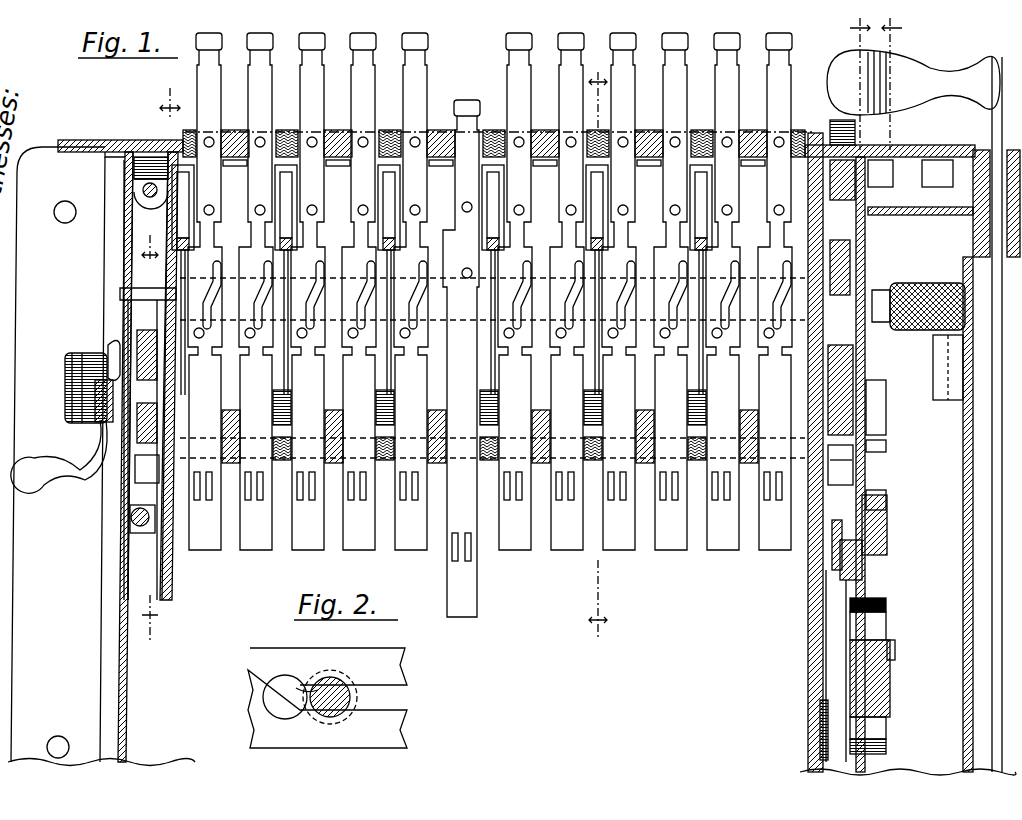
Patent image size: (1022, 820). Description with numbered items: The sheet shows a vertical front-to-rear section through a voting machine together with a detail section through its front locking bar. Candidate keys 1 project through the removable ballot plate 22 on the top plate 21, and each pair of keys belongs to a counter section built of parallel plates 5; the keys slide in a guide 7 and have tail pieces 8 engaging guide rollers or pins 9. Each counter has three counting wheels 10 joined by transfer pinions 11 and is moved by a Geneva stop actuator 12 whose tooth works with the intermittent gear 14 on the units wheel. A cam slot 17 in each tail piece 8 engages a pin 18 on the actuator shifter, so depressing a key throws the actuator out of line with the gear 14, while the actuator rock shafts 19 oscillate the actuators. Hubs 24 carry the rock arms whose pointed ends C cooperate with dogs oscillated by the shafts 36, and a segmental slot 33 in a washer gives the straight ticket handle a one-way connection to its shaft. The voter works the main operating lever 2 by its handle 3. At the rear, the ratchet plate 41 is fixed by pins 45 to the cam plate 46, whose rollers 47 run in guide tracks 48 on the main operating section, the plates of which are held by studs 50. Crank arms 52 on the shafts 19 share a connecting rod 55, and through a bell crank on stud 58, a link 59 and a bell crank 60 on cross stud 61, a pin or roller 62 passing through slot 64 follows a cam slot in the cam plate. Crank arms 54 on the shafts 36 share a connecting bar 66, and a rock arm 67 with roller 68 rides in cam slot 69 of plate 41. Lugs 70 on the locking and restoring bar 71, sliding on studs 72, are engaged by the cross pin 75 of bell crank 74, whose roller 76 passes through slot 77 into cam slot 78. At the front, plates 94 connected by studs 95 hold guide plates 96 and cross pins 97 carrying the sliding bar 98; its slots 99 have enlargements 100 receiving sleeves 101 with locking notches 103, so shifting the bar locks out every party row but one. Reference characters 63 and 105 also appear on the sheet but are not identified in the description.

In FIG. 1, the candidate keys 1 is at (376, 32).
In FIG. 1, the main operating lever 2 is at (982, 512).
In FIG. 1, the handle 3 is at (525, 350).
In FIG. 1, the parallel plates 5 is at (228, 410).
In FIG. 1, the guide 7 is at (225, 140).
In FIG. 1, the tail pieces 8 is at (348, 540).
In FIG. 1, the guide rollers or pins 9 is at (336, 462).
In FIG. 1, the counting wheels 10 is at (892, 77).
In FIG. 1, the transfer pinions 11 is at (860, 77).
In FIG. 1, the Geneva stop actuator 12 is at (264, 270).
In FIG. 1, the intermittent gear 14 is at (170, 104).
In FIG. 1, the cam slot 17 is at (214, 262).
In FIG. 1, the pin 18 is at (248, 328).
In FIG. 1, the actuator rock shafts 19 is at (112, 283).
In FIG. 1, the top plate 21 is at (125, 142).
In FIG. 1, the ballot plate 22 is at (130, 150).
In FIG. 1, the hubs 24 is at (346, 410).
In FIG. 1, the segmental slot 33 is at (70, 380).
In FIG. 1, the dog operating shafts 36 is at (886, 444).
In FIG. 1, the ratchet plate 41 is at (888, 534).
In FIG. 1, the pins 45 is at (896, 650).
In FIG. 1, the cam plate 46 is at (890, 676).
In FIG. 1, the rollers 47 is at (880, 556).
In FIG. 1, the guide tracks 48 is at (886, 500).
In FIG. 2, the studs 50 is at (372, 698).
In FIG. 1, the crank arms 52 is at (850, 272).
In FIG. 1, the crank arms 54 is at (868, 372).
In FIG. 1, the connecting rod 55 is at (850, 245).
In FIG. 1, the stud 58 is at (964, 608).
In FIG. 1, the link 59 is at (840, 682).
In FIG. 1, the bell crank 60 is at (832, 656).
In FIG. 1, the cross stud 61 is at (826, 613).
In FIG. 1, the pin or roller 62 is at (886, 600).
In FIG. 1, the block 63 is at (880, 636).
In FIG. 1, the slot 64 is at (840, 636).
In FIG. 1, the connecting bar 66 is at (860, 342).
In FIG. 1, the rock arm 67 is at (870, 410).
In FIG. 1, the pin or roller 68 is at (886, 386).
In FIG. 1, the cam slot 69 is at (886, 462).
In FIG. 1, the lugs 70 is at (858, 472).
In FIG. 1, the locking and restoring bar 71 is at (830, 580).
In FIG. 1, the studs 72 is at (820, 730).
In FIG. 1, the bell crank 74 is at (830, 566).
In FIG. 1, the cross pin 75 is at (830, 545).
In FIG. 1, the pin or roller 76 is at (880, 722).
In FIG. 1, the slot 77 is at (840, 756).
In FIG. 1, the cam slot 78 is at (886, 748).
In FIG. 1, the plates 94 is at (150, 226).
In FIG. 1, the rivets or studs 95 is at (142, 190).
In FIG. 1, the guide plates 96 is at (140, 312).
In FIG. 1, the cross pins 97 is at (138, 316).
In FIG. 1, the sliding bar 98 is at (138, 440).
In FIG. 2, the sliding bar 98 is at (380, 658).
In FIG. 2, the slots 99 is at (395, 740).
In FIG. 2, the enlargements 100 is at (292, 676).
In FIG. 1, the sleeves 101 is at (110, 392).
In FIG. 2, the sleeves 101 is at (336, 716).
In FIG. 1, the locking notches 103 is at (100, 418).
In FIG. 2, the locking notches 103 is at (305, 700).
In FIG. 1, the disk 105 is at (110, 352).
In FIG. 1, the pointed ends C is at (718, 372).